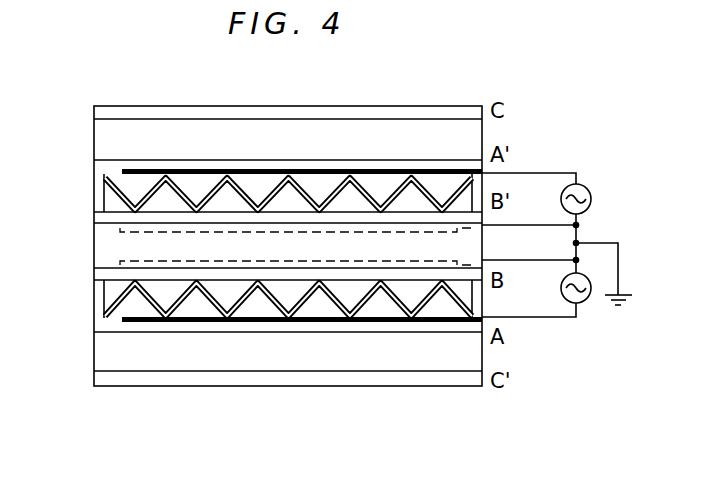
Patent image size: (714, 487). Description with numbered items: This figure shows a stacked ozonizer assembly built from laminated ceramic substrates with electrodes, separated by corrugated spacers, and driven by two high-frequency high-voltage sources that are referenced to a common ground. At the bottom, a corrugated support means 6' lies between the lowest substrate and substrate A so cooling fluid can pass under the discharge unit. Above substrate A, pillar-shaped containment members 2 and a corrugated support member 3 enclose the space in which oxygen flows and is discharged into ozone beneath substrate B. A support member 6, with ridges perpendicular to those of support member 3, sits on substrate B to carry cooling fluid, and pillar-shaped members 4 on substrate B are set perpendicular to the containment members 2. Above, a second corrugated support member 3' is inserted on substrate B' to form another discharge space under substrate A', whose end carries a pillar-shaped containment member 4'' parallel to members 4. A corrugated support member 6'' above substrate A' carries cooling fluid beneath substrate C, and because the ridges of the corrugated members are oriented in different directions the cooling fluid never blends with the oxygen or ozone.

The pillar-shaped containment member 2 is at (100, 186).
The corrugated support member 3 is at (250, 309).
The corrugated support member 3' is at (250, 201).
The pillar-shaped member 4 is at (249, 254).
The pillar-shaped containment member 4'' is at (257, 156).
The support member 6 is at (265, 245).
The corrugated support means 6' is at (264, 351).
The corrugated support member 6'' is at (263, 132).